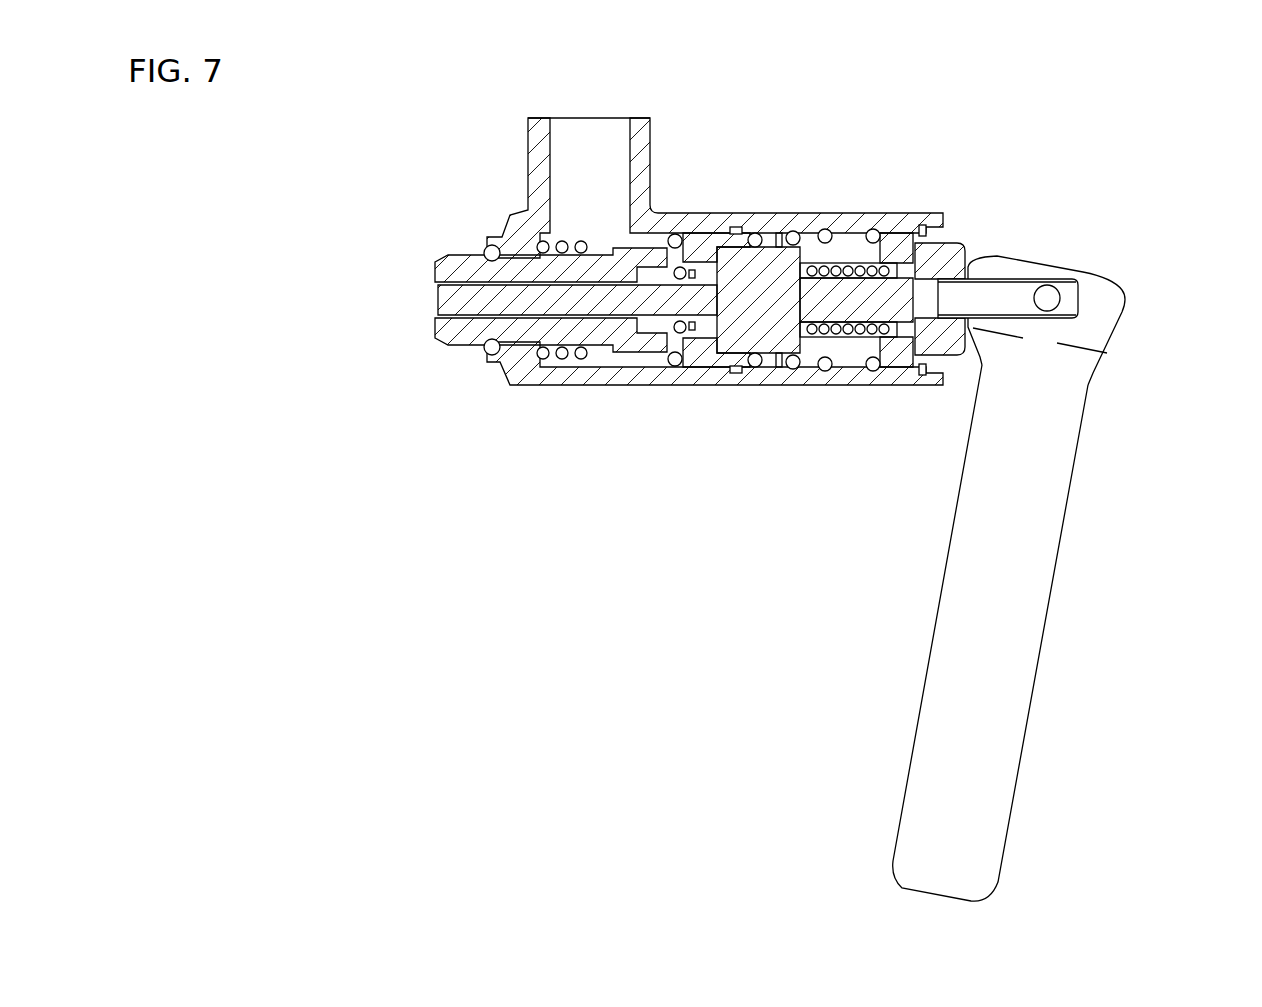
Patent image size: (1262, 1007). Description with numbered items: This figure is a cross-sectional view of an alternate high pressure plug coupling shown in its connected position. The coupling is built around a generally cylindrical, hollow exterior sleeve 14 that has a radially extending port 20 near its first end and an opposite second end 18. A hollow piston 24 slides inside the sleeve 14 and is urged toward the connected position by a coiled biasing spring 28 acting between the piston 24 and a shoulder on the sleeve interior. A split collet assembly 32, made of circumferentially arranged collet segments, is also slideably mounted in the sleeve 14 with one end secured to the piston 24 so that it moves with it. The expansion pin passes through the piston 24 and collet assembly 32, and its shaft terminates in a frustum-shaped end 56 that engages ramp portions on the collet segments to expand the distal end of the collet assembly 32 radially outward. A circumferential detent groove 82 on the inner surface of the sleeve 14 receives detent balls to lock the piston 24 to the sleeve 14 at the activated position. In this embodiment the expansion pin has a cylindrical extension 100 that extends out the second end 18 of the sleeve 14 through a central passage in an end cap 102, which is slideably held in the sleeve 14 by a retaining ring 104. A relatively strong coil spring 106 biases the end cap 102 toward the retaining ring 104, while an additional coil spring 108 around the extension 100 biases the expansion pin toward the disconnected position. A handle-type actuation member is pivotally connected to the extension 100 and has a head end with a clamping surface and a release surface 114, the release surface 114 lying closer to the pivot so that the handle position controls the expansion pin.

The exterior sleeve 14 is at (778, 203).
The second end 18 is at (890, 220).
The radially extending port 20 is at (540, 158).
The piston 24 is at (703, 242).
The coiled biasing spring 28 is at (560, 355).
The split collet assembly 32 is at (430, 343).
The frustum-shaped end 56 is at (463, 302).
The detent groove 82 is at (737, 232).
The cylindrical extension 100 is at (847, 295).
The end cap 102 is at (953, 253).
The retaining ring 104 is at (940, 228).
The coil spring 106 is at (825, 233).
The coil spring 108 is at (813, 332).
The release surface 114 is at (1063, 267).